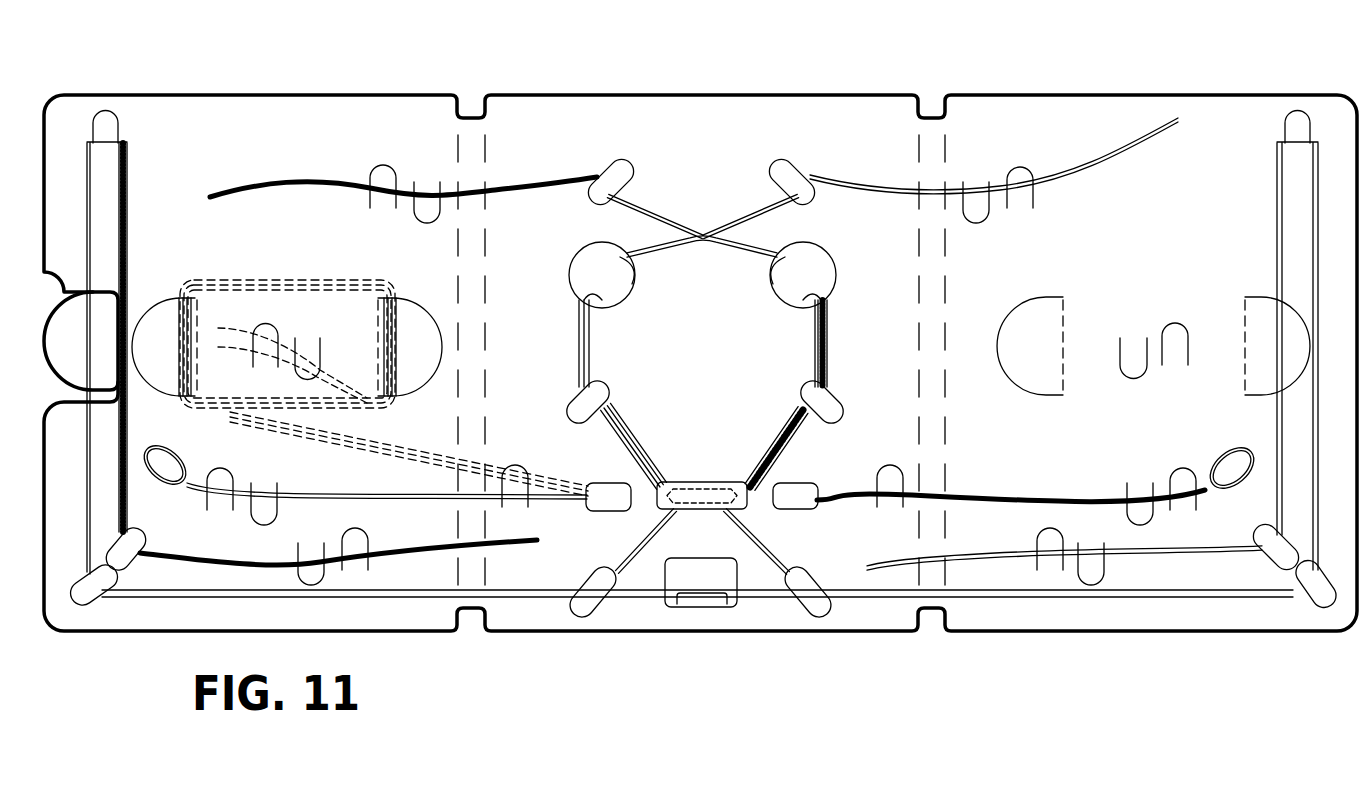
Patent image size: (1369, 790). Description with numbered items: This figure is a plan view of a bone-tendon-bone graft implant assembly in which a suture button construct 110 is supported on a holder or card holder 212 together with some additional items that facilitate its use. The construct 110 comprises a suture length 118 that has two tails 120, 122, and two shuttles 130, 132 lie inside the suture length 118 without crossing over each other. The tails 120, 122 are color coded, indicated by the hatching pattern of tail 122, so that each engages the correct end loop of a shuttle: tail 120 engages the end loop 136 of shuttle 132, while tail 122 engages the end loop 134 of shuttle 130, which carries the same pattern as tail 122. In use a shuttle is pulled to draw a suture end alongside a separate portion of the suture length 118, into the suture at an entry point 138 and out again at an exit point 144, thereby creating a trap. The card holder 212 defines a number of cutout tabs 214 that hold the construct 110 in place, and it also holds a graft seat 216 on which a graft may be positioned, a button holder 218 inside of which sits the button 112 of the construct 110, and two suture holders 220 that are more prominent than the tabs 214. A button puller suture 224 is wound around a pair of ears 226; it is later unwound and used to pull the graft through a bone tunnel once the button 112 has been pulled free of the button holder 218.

The construct 110 is at (847, 336).
The button 112 is at (712, 485).
The suture length 118 is at (732, 252).
The tail 120 is at (897, 557).
The tail 122 is at (505, 548).
The shuttle 130 is at (302, 178).
The shuttle 132 is at (1100, 168).
The end loop 134 is at (1230, 450).
The end loop 136 is at (173, 452).
The entry point 138 is at (582, 318).
The exit point 144 is at (700, 237).
The holder or card holder 212 is at (870, 93).
The cutout tabs 214 is at (427, 222).
The graft seat 216 is at (740, 608).
The button holder 218 is at (690, 481).
The suture holders 220 is at (590, 246).
The button puller suture 224 is at (283, 280).
The ears 226 is at (150, 300).